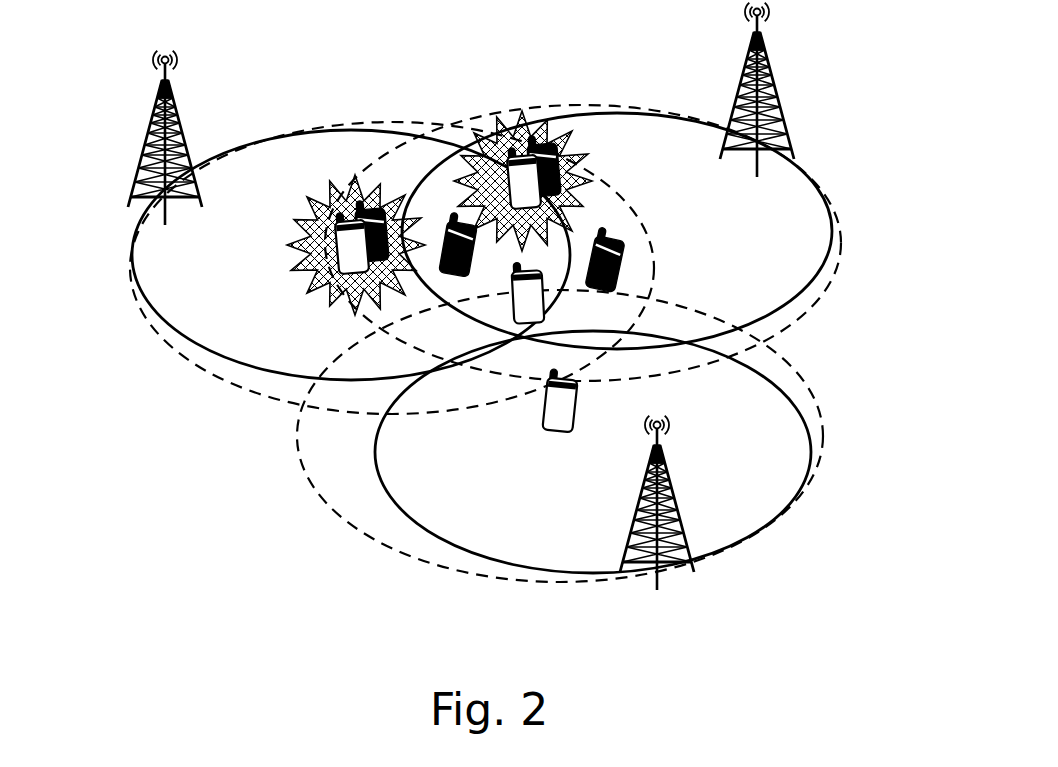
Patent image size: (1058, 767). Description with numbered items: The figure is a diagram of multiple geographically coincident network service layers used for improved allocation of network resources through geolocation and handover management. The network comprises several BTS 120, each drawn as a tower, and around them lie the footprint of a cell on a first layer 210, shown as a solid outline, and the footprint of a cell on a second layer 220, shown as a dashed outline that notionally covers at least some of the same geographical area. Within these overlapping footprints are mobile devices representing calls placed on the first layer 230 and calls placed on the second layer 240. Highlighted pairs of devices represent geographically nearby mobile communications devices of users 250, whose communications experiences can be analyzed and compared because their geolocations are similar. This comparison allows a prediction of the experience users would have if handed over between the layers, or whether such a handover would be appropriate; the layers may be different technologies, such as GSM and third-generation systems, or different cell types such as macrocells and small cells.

The BTS 120 is at (148, 135).
The footprint of a cell on a first layer 210 is at (590, 115).
The footprint of a cell on a second layer 220 is at (461, 118).
The calls placed on the first layer 230 is at (623, 262).
The calls placed on the second layer 240 is at (547, 417).
The geographically nearby mobile communications devices of users 250 is at (478, 182).